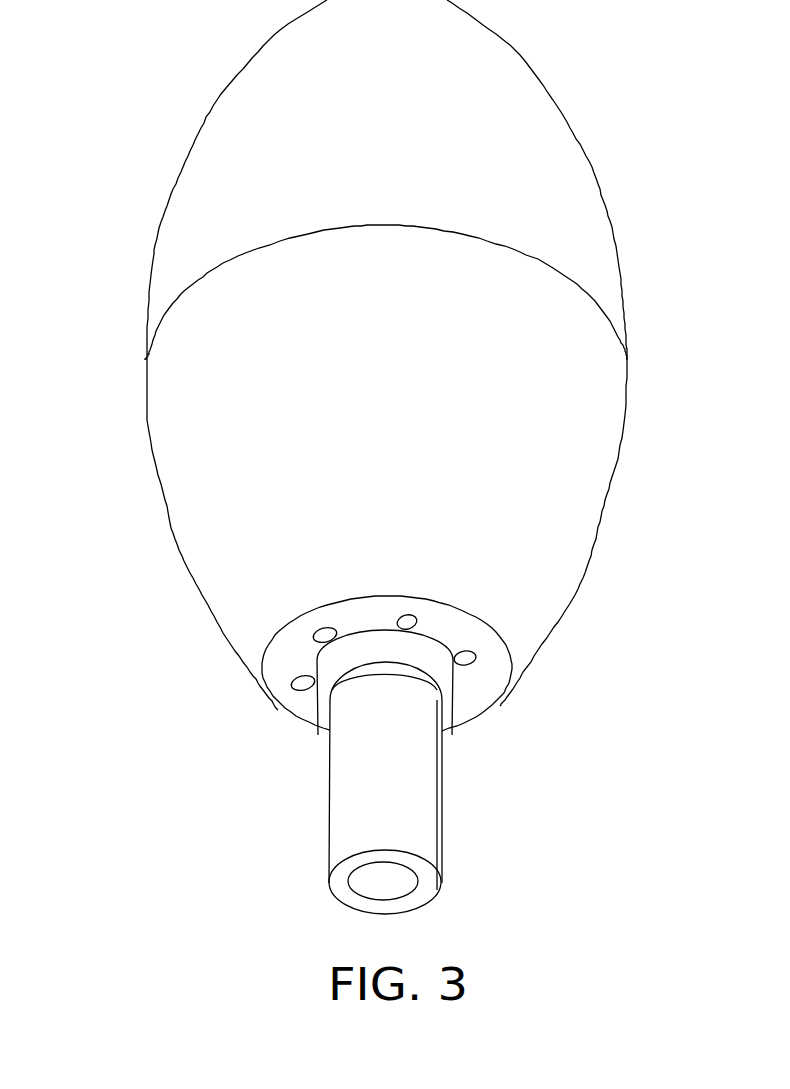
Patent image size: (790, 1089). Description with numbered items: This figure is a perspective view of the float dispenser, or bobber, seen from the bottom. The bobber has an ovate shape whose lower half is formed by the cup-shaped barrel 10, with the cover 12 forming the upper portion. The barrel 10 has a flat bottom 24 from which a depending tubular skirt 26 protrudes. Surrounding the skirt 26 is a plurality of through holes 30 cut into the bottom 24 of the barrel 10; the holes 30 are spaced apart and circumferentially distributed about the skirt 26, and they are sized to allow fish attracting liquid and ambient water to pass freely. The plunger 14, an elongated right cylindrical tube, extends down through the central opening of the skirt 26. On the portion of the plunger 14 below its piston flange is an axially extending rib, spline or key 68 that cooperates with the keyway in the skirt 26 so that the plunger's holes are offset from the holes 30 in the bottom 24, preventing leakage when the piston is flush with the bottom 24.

The barrel 10 is at (197, 508).
The cover 12 is at (213, 156).
The plunger 14 is at (360, 803).
The flat bottom 24 is at (483, 693).
The tubular skirt 26 is at (395, 652).
The through holes 30 is at (411, 618).
The key 68 is at (437, 843).